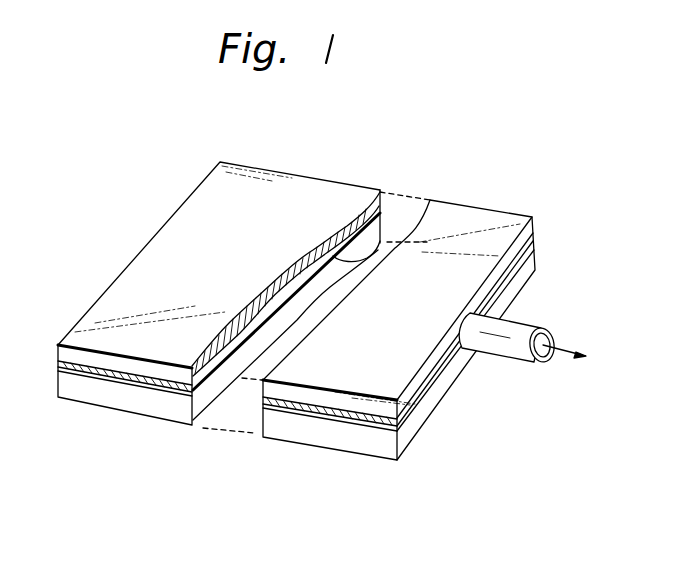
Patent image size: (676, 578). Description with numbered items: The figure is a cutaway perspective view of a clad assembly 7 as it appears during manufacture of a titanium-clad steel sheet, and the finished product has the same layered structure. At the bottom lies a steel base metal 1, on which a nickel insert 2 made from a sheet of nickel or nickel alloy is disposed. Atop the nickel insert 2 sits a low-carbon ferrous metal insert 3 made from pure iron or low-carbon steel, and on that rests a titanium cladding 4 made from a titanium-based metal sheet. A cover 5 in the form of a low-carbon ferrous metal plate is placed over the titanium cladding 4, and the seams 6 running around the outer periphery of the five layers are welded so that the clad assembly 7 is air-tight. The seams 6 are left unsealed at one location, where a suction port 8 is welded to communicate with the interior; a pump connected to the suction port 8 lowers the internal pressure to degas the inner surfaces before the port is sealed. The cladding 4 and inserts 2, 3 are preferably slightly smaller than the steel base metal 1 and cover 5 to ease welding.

The steel base metal 1 is at (225, 377).
The nickel insert 2 is at (193, 371).
The low-carbon ferrous metal insert 3 is at (388, 240).
The titanium cladding 4 is at (283, 273).
The cover 5 is at (320, 188).
The seams 6 is at (78, 377).
The clad assembly 7 is at (160, 215).
The suction port 8 is at (540, 363).